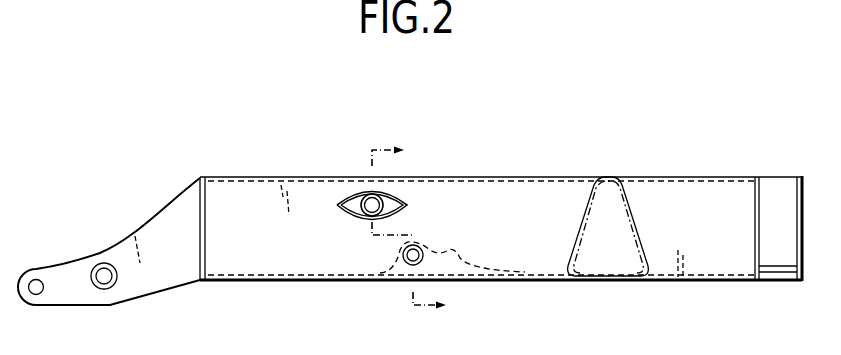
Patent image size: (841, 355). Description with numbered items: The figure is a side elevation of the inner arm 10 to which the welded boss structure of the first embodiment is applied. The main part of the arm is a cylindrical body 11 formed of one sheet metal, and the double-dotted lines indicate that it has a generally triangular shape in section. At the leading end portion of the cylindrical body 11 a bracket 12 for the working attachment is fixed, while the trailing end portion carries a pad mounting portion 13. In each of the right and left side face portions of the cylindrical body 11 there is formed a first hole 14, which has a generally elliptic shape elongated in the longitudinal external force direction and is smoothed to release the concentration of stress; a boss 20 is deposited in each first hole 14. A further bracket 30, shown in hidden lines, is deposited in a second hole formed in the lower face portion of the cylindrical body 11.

The inner arm 10 is at (461, 78).
The cylindrical body 11 is at (528, 176).
The bracket 12 is at (144, 236).
The pad mounting portion 13 is at (781, 190).
The first holes 14 is at (402, 200).
The bosses 20 is at (352, 203).
The bracket 30 is at (457, 272).